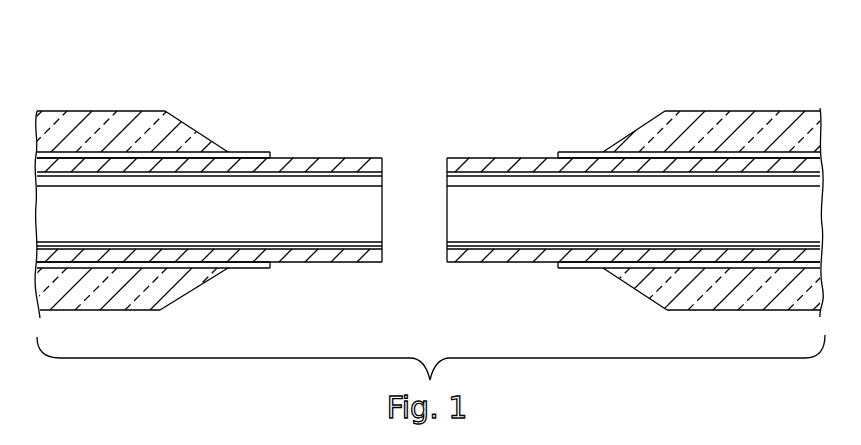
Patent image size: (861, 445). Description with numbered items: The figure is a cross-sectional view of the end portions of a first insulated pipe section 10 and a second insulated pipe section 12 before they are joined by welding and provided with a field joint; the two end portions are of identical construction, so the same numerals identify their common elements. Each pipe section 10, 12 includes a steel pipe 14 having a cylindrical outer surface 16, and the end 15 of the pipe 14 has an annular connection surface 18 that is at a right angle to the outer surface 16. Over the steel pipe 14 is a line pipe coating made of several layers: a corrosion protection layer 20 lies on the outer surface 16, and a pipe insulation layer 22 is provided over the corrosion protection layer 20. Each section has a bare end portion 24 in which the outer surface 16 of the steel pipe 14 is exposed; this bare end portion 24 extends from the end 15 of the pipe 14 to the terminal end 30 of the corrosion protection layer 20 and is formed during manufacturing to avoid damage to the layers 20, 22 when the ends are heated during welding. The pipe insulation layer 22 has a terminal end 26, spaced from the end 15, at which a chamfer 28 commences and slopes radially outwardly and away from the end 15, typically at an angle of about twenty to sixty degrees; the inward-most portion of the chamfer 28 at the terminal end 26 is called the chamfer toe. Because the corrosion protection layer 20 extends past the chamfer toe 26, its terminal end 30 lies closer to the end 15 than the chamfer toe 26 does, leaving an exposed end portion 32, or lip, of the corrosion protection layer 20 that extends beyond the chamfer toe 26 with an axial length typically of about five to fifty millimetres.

The first insulated pipe section 10 is at (262, 105).
The second insulated pipe section 12 is at (593, 108).
The steel pipe 14 is at (33, 155).
The end of pipe 15 is at (387, 160).
The cylindrical outer surface 16 is at (337, 158).
The annular connection surface 18 is at (382, 233).
The corrosion protection layer 20 is at (98, 152).
The pipe insulation layer 22 is at (155, 293).
The bare end portion 24 is at (325, 262).
The terminal end of pipe insulation layer 26 is at (228, 152).
The chamfer 28 is at (197, 150).
The terminal end of corrosion protection layer 30 is at (265, 268).
The exposed end portion of corrosion protection layer 32 is at (270, 153).